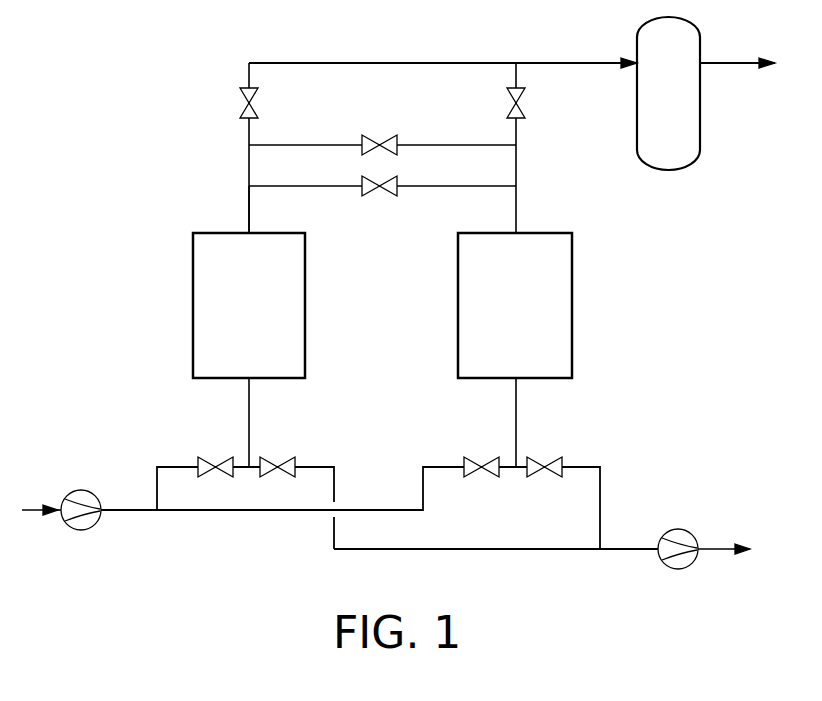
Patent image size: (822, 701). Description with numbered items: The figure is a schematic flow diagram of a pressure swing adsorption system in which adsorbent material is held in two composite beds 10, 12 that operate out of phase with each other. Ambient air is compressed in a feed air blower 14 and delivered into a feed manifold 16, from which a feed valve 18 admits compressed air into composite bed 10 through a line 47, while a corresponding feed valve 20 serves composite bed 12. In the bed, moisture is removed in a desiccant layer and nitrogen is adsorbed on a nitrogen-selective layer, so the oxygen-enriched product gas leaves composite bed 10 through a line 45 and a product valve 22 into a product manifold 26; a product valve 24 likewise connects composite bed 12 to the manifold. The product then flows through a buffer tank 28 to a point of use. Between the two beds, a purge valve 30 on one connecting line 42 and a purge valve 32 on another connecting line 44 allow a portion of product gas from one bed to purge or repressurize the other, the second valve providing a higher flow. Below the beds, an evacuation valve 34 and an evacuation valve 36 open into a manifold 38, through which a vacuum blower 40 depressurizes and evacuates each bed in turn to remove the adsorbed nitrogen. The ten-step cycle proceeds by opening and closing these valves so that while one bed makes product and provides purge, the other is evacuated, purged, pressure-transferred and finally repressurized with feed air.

The composite bed 10 is at (230, 315).
The composite bed 12 is at (498, 315).
The feed air blower 14 is at (89, 490).
The feed manifold 16 is at (293, 512).
The feed valve 18 is at (219, 474).
The feed valve 20 is at (484, 459).
The product valve 22 is at (242, 95).
The product valve 24 is at (524, 103).
The product manifold 26 is at (418, 63).
The buffer tank 28 is at (653, 103).
The purge valve 30 is at (386, 136).
The purge valve 32 is at (372, 193).
The evacuation valve 34 is at (280, 458).
The evacuation valve 36 is at (552, 459).
The manifold 38 is at (520, 551).
The vacuum blower 40 is at (680, 530).
The equalization line 42 is at (430, 146).
The purge line 44 is at (445, 187).
The line 45 is at (247, 217).
The line 47 is at (249, 411).